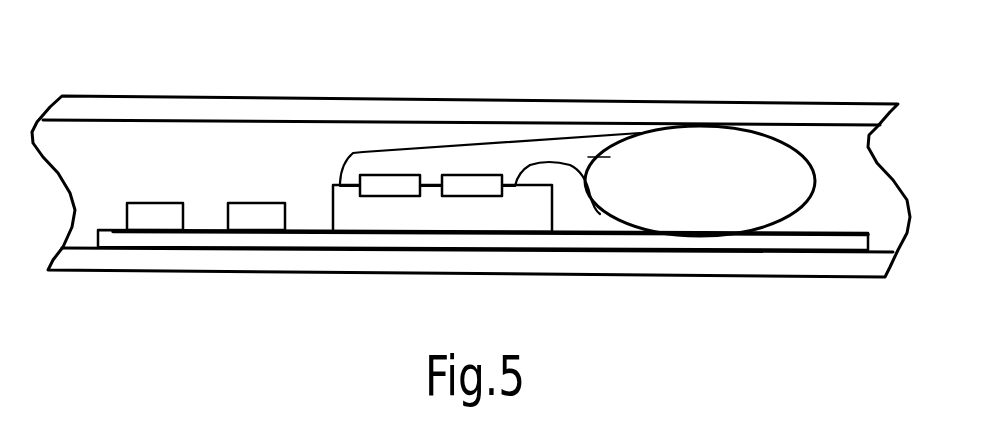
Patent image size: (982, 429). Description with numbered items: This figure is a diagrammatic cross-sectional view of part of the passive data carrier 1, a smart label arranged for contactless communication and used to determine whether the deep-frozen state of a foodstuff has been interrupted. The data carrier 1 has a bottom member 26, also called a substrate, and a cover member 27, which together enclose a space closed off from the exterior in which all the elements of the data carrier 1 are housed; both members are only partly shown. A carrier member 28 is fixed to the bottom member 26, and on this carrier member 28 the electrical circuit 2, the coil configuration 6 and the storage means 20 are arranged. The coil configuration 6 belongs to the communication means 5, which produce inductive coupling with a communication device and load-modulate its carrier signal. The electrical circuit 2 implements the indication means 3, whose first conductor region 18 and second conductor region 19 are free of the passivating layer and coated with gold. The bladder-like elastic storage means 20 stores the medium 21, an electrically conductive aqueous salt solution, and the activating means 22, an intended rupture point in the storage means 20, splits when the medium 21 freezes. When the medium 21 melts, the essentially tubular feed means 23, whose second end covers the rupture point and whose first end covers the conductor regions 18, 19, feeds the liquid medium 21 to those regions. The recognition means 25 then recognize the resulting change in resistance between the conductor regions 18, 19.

The data carrier 1 is at (471, 184).
The electrical circuit 2 is at (463, 203).
The indication means 3 is at (475, 186).
The communication means 5 is at (188, 179).
The coil configuration 6 is at (257, 213).
The first conductor region 18 is at (370, 199).
The second conductor region 19 is at (453, 199).
The storage means 20 is at (727, 181).
The medium 21 is at (814, 183).
The activating means 22 is at (614, 158).
The feed means 23 is at (341, 164).
The recognition means 25 is at (417, 187).
The bottom member 26 is at (290, 262).
The cover member 27 is at (360, 108).
The carrier member 28 is at (120, 229).